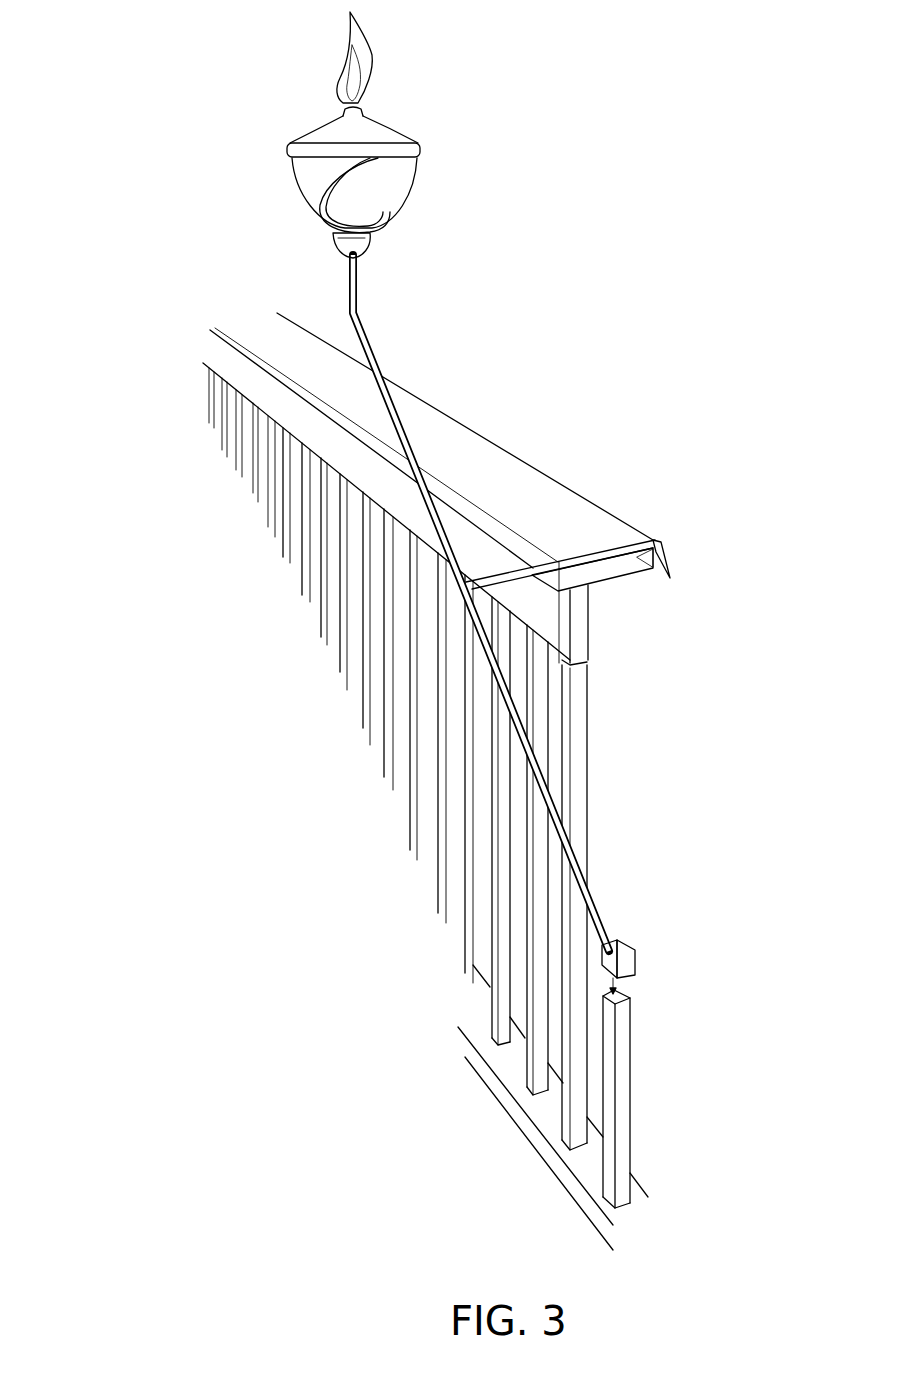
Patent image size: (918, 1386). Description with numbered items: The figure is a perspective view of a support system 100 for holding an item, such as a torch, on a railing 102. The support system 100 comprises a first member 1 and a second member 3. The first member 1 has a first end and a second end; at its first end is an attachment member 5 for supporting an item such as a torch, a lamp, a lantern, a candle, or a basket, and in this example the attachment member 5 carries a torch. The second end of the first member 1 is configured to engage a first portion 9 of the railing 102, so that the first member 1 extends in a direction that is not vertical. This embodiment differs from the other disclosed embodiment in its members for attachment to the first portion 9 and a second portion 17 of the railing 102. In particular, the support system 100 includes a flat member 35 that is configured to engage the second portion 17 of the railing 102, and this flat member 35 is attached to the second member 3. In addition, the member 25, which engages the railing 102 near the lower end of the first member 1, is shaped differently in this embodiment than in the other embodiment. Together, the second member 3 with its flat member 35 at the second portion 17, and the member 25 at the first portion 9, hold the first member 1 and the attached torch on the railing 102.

The support system 100 is at (452, 503).
The railing 102 is at (576, 426).
The first member 1 is at (387, 348).
The attachment member 5 is at (380, 242).
The second member 3 is at (634, 557).
The flat member 35 is at (668, 560).
The second portion of the railing 17 is at (617, 577).
The member 25 is at (637, 953).
The first portion of the railing 9 is at (645, 995).